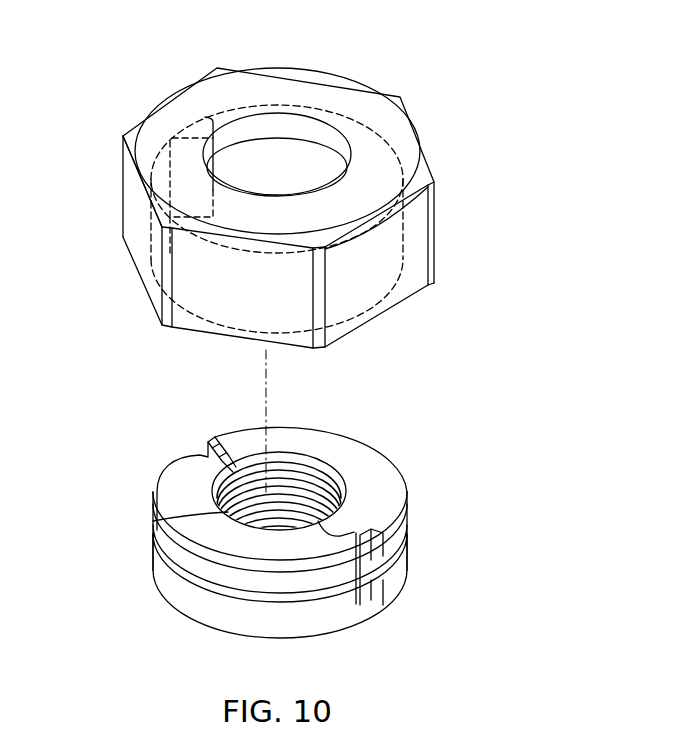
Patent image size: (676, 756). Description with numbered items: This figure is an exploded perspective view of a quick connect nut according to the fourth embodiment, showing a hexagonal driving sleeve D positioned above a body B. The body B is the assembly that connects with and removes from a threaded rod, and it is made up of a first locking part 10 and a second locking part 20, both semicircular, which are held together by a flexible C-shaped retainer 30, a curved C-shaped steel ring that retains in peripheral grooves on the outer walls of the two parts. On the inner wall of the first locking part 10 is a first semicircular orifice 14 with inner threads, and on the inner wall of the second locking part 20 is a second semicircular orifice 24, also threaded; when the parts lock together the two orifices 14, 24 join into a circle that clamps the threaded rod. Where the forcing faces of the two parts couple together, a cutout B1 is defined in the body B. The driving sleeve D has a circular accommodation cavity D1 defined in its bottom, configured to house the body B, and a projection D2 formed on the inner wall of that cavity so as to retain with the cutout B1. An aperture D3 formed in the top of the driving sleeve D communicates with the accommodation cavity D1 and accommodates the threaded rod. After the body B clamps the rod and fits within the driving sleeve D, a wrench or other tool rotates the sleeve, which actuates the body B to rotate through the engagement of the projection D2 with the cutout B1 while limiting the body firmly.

The driving sleeve D is at (301, 194).
The accommodation cavity D1 is at (208, 296).
The projection D2 is at (186, 153).
The aperture D3 is at (294, 127).
The body B is at (323, 538).
The cutout B1 is at (190, 444).
The first locking part 10 is at (181, 600).
The first semicircular orifice 14 is at (153, 521).
The second locking part 20 is at (387, 474).
The second semicircular orifice 24 is at (313, 472).
The flexible C-shaped retainer 30 is at (362, 582).